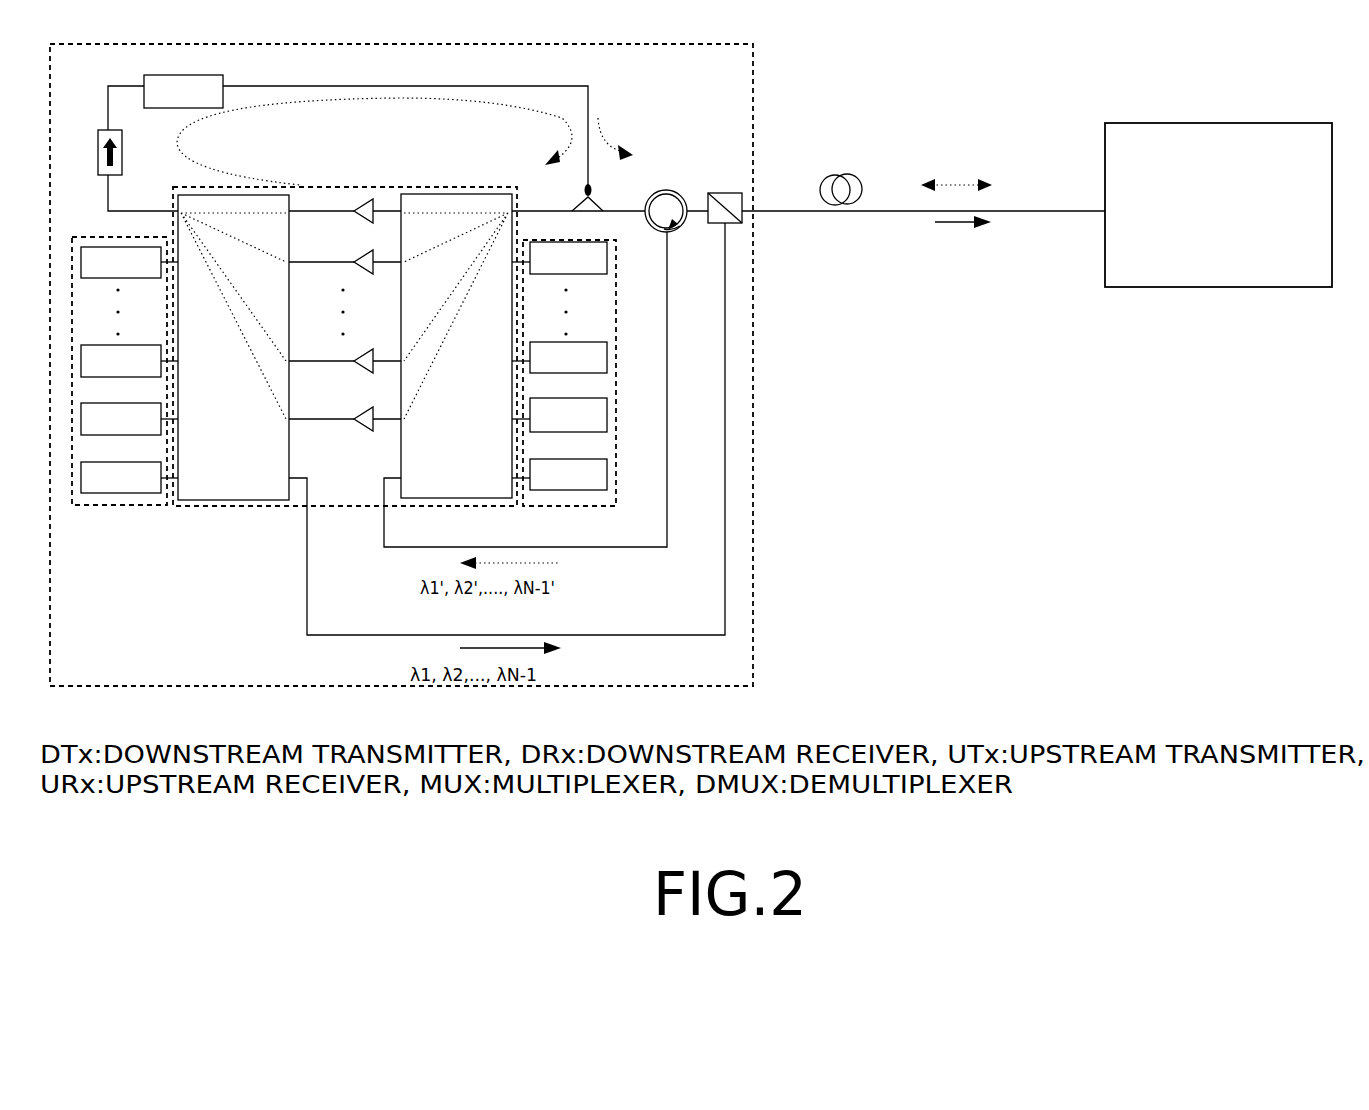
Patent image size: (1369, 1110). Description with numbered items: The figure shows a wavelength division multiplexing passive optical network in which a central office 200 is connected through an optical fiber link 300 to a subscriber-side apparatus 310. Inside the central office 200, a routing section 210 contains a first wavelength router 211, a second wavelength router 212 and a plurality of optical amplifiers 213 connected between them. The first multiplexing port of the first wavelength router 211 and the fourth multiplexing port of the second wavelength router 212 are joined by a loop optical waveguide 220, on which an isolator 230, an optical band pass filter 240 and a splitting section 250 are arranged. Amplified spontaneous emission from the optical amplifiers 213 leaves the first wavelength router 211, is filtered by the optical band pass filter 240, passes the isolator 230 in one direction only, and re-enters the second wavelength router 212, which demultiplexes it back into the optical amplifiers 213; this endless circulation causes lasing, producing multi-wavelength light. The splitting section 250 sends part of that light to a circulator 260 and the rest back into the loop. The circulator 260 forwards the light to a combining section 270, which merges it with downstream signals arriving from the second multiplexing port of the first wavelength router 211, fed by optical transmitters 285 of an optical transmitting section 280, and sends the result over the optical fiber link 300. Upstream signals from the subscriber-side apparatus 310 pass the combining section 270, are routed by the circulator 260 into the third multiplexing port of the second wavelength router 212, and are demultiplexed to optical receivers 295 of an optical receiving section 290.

The central office 200 is at (753, 88).
The routing section 210 is at (360, 506).
The first wavelength router 211 is at (289, 440).
The second wavelength router 212 is at (401, 468).
The optical amplifiers 213 is at (358, 382).
The loop optical waveguide 220 is at (588, 95).
The isolator 230 is at (100, 175).
The optical band pass filter 240 is at (165, 108).
The splitting section 250 is at (584, 190).
The circulator 260 is at (660, 232).
The combining section 270 is at (715, 224).
The optical transmitting section 280 is at (97, 505).
The optical transmitters 285 is at (130, 493).
The optical receiving section 290 is at (562, 506).
The optical receivers 295 is at (600, 490).
The optical fiber link 300 is at (837, 175).
The subscriber-side apparatus 310 is at (1202, 123).